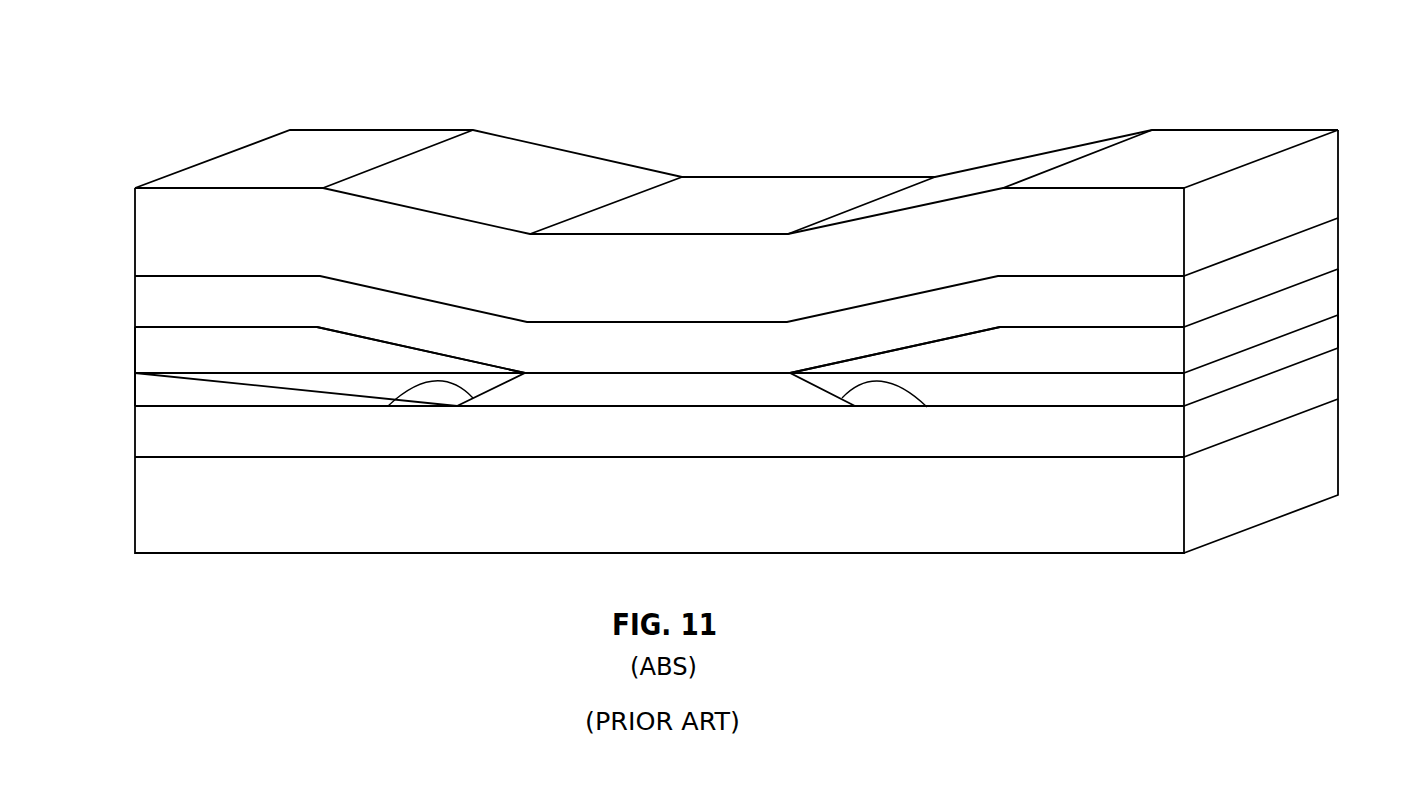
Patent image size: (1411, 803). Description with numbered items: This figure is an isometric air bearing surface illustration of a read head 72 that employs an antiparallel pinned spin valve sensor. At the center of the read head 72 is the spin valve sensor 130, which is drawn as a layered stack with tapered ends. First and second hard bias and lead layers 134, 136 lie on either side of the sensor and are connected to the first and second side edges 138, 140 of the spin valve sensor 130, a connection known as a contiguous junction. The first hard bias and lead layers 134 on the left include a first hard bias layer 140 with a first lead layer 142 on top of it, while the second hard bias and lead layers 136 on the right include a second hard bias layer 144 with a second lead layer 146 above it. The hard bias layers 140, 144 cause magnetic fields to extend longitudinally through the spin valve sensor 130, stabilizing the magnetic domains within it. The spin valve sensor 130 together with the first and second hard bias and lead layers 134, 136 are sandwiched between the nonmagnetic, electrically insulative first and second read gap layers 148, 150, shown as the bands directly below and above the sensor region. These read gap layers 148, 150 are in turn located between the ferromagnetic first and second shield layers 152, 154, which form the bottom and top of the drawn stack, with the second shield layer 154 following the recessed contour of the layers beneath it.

The read head 72 is at (822, 140).
The spin valve sensor 130 is at (566, 362).
The first hard bias and lead layers 134 is at (130, 327).
The second hard bias and lead layers 136 is at (1347, 267).
The first side edge 138 is at (419, 414).
The first hard bias layer 140 is at (178, 392).
The first lead layer 142 is at (178, 340).
The second hard bias layer 144 is at (1128, 390).
The second lead layer 146 is at (1129, 338).
The first read gap layer 148 is at (433, 450).
The second read gap layer 150 is at (387, 305).
The first shield layer 152 is at (310, 533).
The second shield layer 154 is at (585, 165).